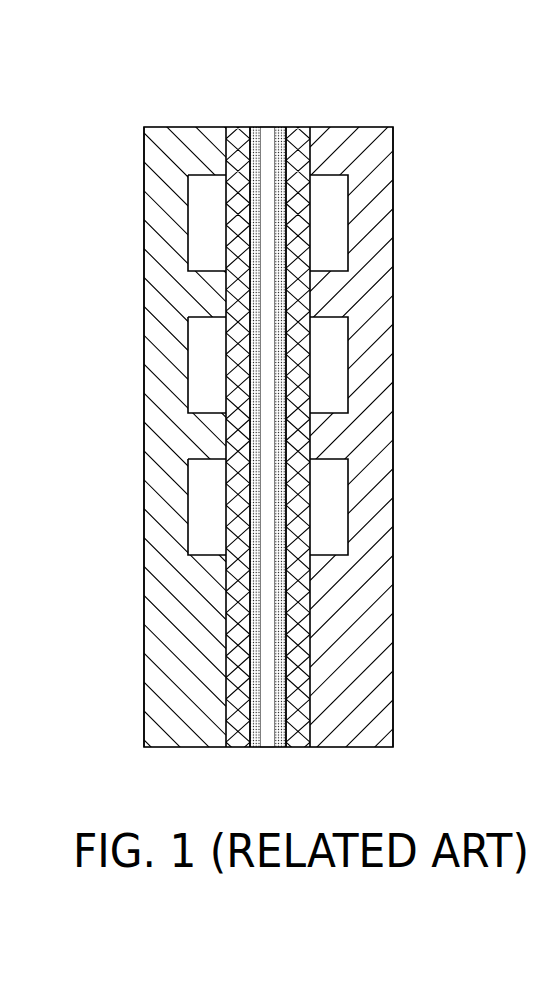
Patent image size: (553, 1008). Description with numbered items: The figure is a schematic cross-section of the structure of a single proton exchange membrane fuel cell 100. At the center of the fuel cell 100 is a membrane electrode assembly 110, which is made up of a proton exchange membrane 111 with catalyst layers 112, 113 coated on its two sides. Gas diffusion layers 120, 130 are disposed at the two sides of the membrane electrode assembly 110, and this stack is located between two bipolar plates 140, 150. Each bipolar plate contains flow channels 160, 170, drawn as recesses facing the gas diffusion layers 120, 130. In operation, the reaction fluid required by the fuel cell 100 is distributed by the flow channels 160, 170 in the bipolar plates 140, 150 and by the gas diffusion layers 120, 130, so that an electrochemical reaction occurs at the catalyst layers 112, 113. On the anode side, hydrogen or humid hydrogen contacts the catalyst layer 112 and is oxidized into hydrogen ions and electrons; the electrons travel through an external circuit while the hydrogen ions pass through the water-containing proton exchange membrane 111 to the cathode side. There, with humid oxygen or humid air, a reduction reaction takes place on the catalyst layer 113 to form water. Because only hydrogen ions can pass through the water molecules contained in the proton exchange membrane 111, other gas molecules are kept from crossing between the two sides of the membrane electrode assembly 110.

The fuel cell 100 is at (530, 775).
The membrane electrode assembly 110 is at (272, 383).
The proton exchange membrane 111 is at (268, 135).
The catalyst layer 112 is at (255, 128).
The catalyst layer 113 is at (308, 407).
The gas diffusion layer 120 is at (237, 660).
The gas diffusion layer 130 is at (293, 660).
The bipolar plate 140 is at (167, 222).
The bipolar plate 150 is at (372, 222).
The flow channel 160 is at (210, 367).
The flow channel 170 is at (355, 363).